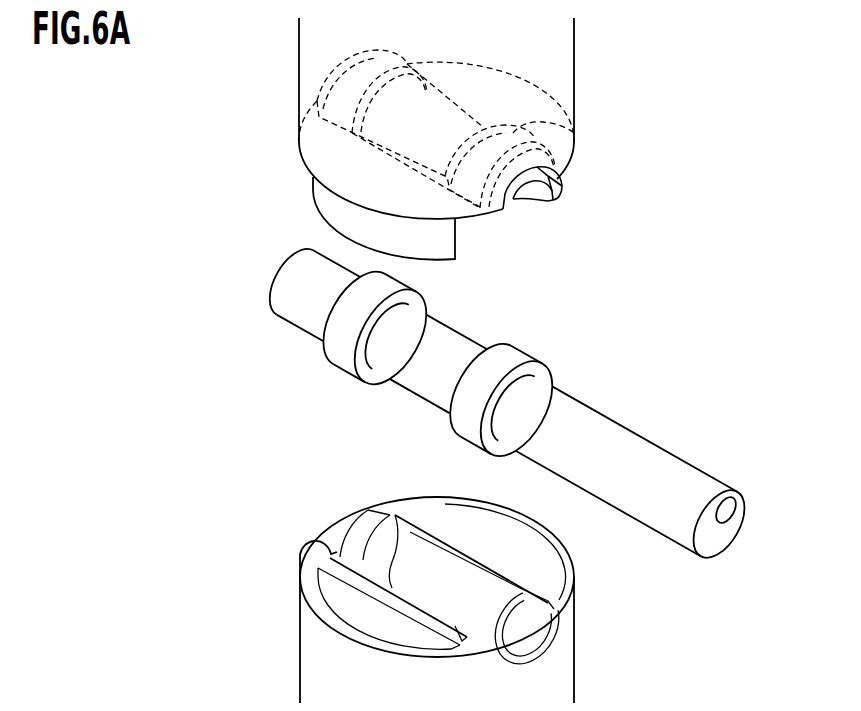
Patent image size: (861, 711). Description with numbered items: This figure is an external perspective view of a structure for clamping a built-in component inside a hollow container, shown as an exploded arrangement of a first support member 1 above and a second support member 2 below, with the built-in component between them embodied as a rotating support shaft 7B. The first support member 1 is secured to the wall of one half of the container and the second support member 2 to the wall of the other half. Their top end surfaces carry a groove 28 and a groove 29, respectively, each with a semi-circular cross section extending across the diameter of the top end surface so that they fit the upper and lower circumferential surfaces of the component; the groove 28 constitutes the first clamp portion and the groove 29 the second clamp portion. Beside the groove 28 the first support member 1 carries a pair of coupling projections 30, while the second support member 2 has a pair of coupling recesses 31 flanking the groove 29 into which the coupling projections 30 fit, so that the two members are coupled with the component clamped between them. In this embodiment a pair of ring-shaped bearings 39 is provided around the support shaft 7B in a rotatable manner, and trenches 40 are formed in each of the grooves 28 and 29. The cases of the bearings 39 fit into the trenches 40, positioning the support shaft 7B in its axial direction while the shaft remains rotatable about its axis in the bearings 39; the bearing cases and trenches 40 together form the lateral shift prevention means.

The first support member 1 is at (598, 56).
The second support member 2 is at (598, 653).
The support shaft 7B is at (667, 463).
The groove 28 is at (513, 201).
The groove 29 is at (486, 595).
The coupling projection 30 is at (333, 205).
The coupling recess 31 is at (336, 592).
The bearing 39 is at (337, 352).
The trench 40 is at (573, 131).